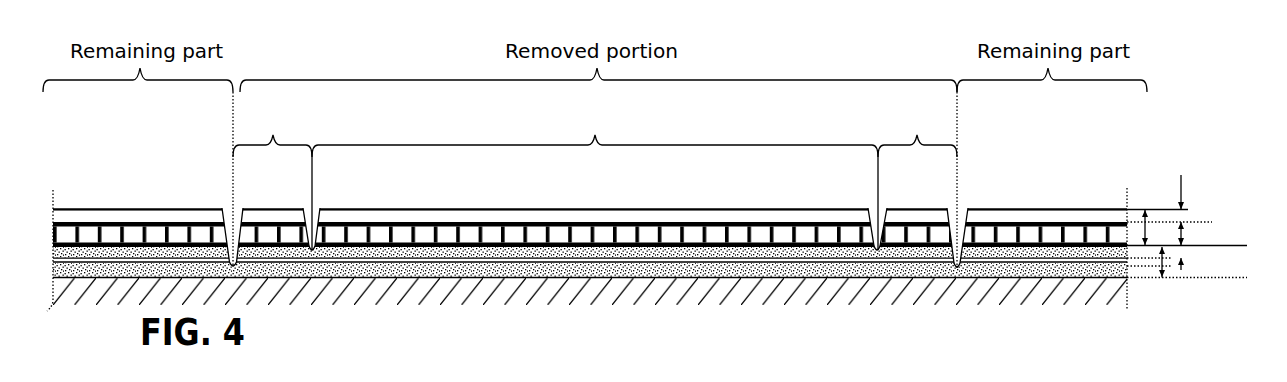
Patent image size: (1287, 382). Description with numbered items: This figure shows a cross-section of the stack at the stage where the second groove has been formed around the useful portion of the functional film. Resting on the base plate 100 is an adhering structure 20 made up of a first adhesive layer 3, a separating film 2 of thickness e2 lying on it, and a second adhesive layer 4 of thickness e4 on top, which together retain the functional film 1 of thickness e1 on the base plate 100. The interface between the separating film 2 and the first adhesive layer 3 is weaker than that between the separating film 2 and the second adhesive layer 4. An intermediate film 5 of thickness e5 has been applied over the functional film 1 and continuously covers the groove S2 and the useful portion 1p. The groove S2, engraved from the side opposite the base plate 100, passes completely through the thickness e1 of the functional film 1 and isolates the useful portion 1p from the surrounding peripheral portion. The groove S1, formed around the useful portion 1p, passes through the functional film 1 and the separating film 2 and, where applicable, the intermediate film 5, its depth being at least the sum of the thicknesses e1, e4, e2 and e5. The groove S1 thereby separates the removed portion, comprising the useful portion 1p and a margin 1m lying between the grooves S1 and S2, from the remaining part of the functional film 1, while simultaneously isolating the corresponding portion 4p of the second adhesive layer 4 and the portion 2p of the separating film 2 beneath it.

The functional film 1 is at (1212, 222).
The useful portion 1p is at (533, 322).
The margin 1m is at (595, 124).
The separating film 2 is at (1065, 262).
The portion of the separating film 2p is at (597, 262).
The first adhesive layer 3 is at (1023, 272).
The second adhesive layer 4 is at (988, 255).
The portion of the second adhesive layer 4p is at (670, 253).
The intermediate film 5 is at (1057, 207).
The adhering structure 20 is at (666, 296).
The base plate 100 is at (1093, 292).
The groove S1 is at (225, 207).
The groove S2 is at (306, 207).
The thickness of the functional film e1 is at (1156, 230).
The thickness of the separating film e2 is at (1171, 277).
The thickness of the second adhesive layer e4 is at (1193, 254).
The thickness of the intermediate film e5 is at (1192, 210).